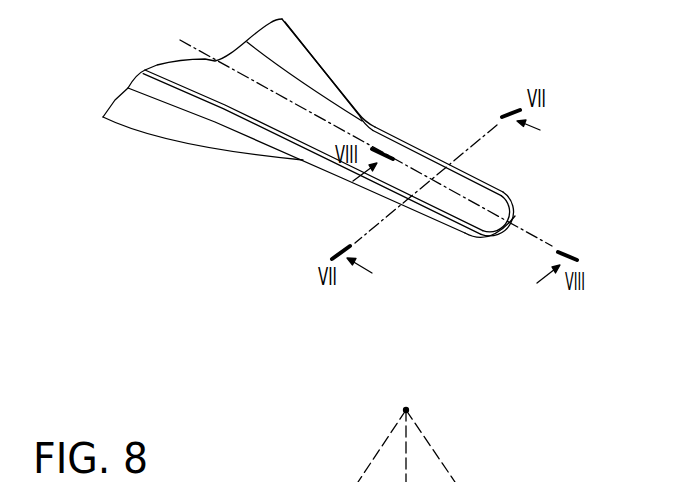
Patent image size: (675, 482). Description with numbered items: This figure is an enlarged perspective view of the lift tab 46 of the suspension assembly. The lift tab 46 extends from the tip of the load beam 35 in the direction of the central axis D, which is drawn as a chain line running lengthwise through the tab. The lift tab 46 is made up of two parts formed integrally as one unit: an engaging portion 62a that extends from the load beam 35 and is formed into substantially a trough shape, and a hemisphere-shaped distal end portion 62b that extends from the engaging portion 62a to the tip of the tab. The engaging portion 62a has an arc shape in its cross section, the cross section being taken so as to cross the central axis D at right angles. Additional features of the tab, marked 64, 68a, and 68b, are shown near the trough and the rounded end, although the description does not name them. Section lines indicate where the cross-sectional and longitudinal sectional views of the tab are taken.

The load beam 35 is at (288, 85).
The lift tab 46 is at (358, 189).
The engaging portion 62a is at (438, 154).
The distal end portion 62b is at (508, 198).
The folded edge 64 is at (417, 210).
The first end portion 68a is at (452, 222).
The second end portion 68b is at (487, 197).
The central axis D is at (538, 240).